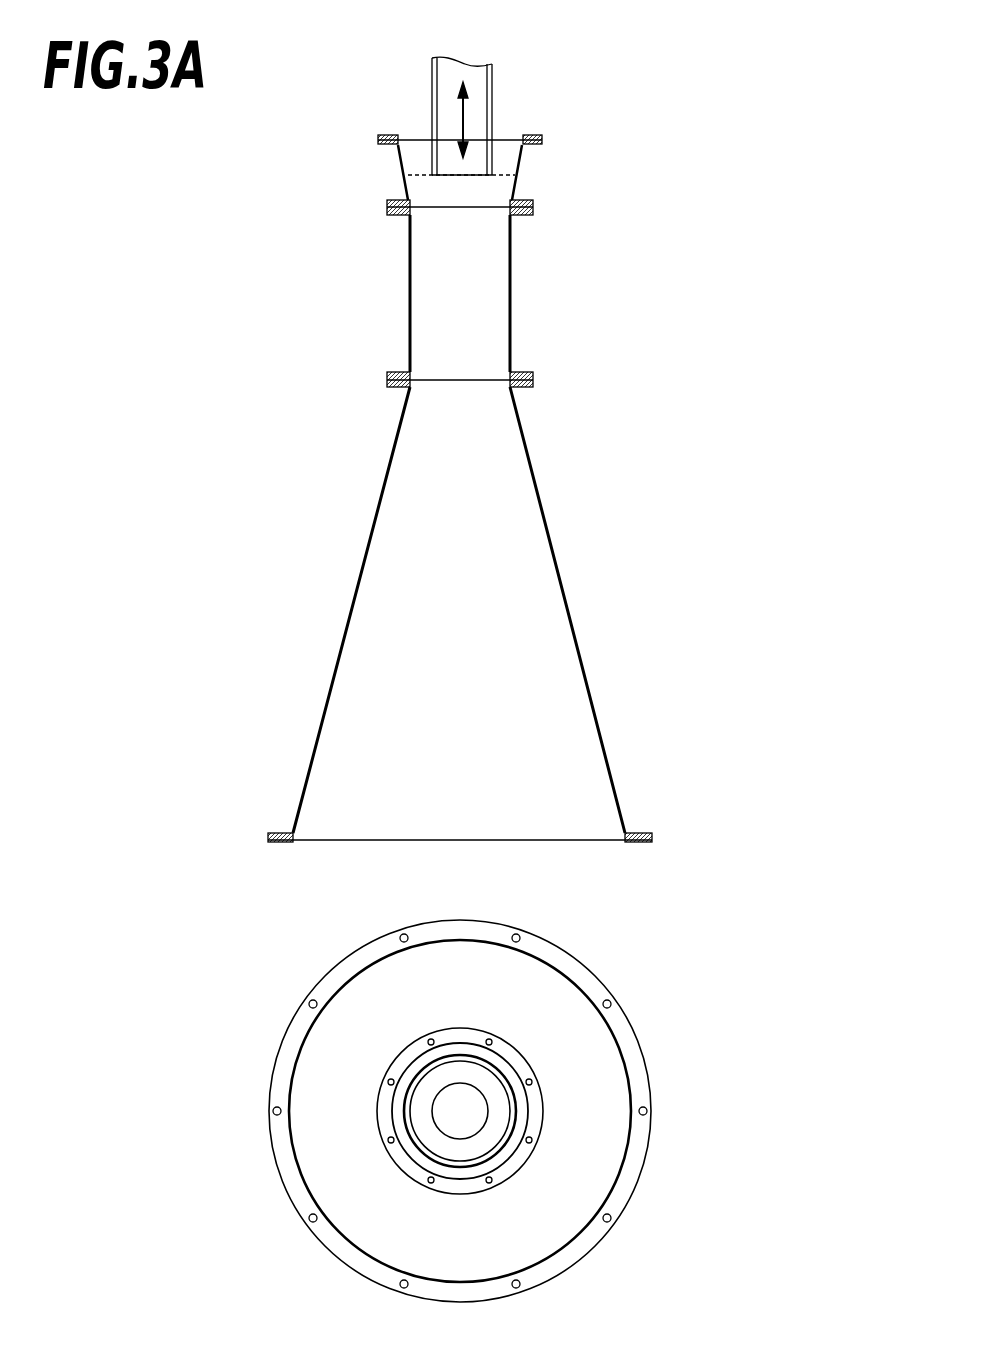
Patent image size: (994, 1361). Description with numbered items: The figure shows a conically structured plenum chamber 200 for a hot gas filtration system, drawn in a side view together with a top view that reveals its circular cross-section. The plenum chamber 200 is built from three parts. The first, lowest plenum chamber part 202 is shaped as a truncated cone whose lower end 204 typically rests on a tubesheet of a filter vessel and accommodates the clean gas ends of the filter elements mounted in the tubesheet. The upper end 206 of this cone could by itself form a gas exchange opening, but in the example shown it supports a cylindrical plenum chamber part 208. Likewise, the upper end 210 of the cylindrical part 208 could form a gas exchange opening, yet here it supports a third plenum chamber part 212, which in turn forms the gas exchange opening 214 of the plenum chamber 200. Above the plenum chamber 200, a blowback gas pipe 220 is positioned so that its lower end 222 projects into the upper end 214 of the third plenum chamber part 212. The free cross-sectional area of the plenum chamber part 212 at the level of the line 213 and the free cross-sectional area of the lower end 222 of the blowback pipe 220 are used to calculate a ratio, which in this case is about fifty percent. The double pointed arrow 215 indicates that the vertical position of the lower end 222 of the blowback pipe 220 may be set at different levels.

The plenum chamber 200 is at (612, 462).
The first, lowest plenum chamber part 202 is at (570, 608).
The lower end 204 is at (625, 842).
The upper end 206 is at (487, 378).
The cylindrical plenum chamber part 208 is at (512, 273).
The upper end 210 is at (433, 205).
The third plenum chamber part 212 is at (405, 160).
The line 213 is at (507, 167).
The gas exchange opening 214 is at (408, 137).
The double pointed arrow 215 is at (460, 120).
The blowback gas pipe 220 is at (493, 87).
The lower end 222 is at (493, 181).